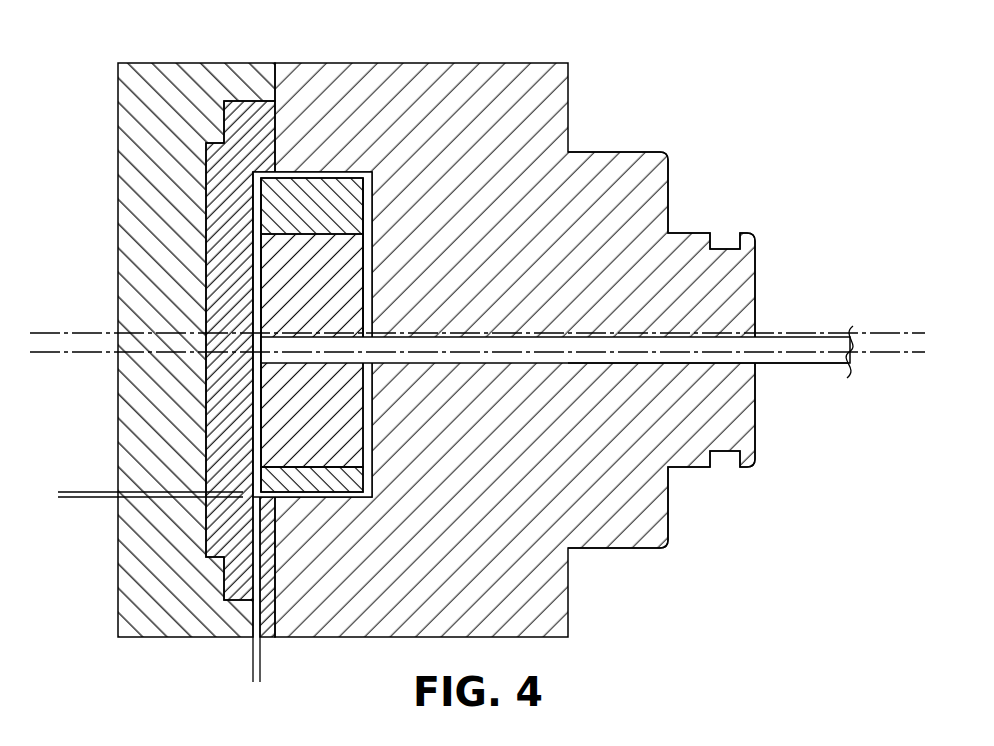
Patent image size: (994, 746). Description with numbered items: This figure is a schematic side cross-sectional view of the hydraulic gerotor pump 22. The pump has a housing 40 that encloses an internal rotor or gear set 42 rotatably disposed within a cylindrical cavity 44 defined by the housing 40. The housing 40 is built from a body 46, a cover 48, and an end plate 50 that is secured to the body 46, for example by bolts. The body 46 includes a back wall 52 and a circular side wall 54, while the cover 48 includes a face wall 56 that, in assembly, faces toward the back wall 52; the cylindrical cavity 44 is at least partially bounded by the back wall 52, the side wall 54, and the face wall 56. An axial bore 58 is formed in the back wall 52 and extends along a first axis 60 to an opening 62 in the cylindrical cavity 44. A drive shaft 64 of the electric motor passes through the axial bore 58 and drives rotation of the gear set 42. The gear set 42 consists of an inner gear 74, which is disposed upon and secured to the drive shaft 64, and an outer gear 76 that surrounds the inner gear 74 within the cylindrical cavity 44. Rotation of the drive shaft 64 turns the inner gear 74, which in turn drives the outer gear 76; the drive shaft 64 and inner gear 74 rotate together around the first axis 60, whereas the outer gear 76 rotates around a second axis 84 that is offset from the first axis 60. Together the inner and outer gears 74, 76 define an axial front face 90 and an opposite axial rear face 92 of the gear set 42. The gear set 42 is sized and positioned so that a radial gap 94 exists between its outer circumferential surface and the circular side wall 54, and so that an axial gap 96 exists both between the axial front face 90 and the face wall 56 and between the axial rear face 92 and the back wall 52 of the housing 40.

The hydraulic gerotor pump 22 is at (750, 106).
The housing 40 is at (633, 146).
The gear set 42 is at (334, 164).
The cylindrical cavity 44 is at (365, 432).
The body 46 is at (568, 588).
The cover 48 is at (250, 99).
The end plate 50 is at (118, 97).
The back wall 52 is at (365, 222).
The circular side wall 54 is at (298, 181).
The face wall 56 is at (256, 206).
The axial bore 58 is at (652, 363).
The first axis 60 is at (904, 352).
The opening 62 is at (370, 343).
The drive shaft 64 is at (810, 363).
The inner gear 74 is at (364, 476).
The outer gear 76 is at (373, 497).
The second axis 84 is at (850, 333).
The axial front face 90 is at (258, 280).
The axial rear face 92 is at (365, 280).
The radial gap 94 is at (74, 550).
The axial gap 96 is at (310, 668).